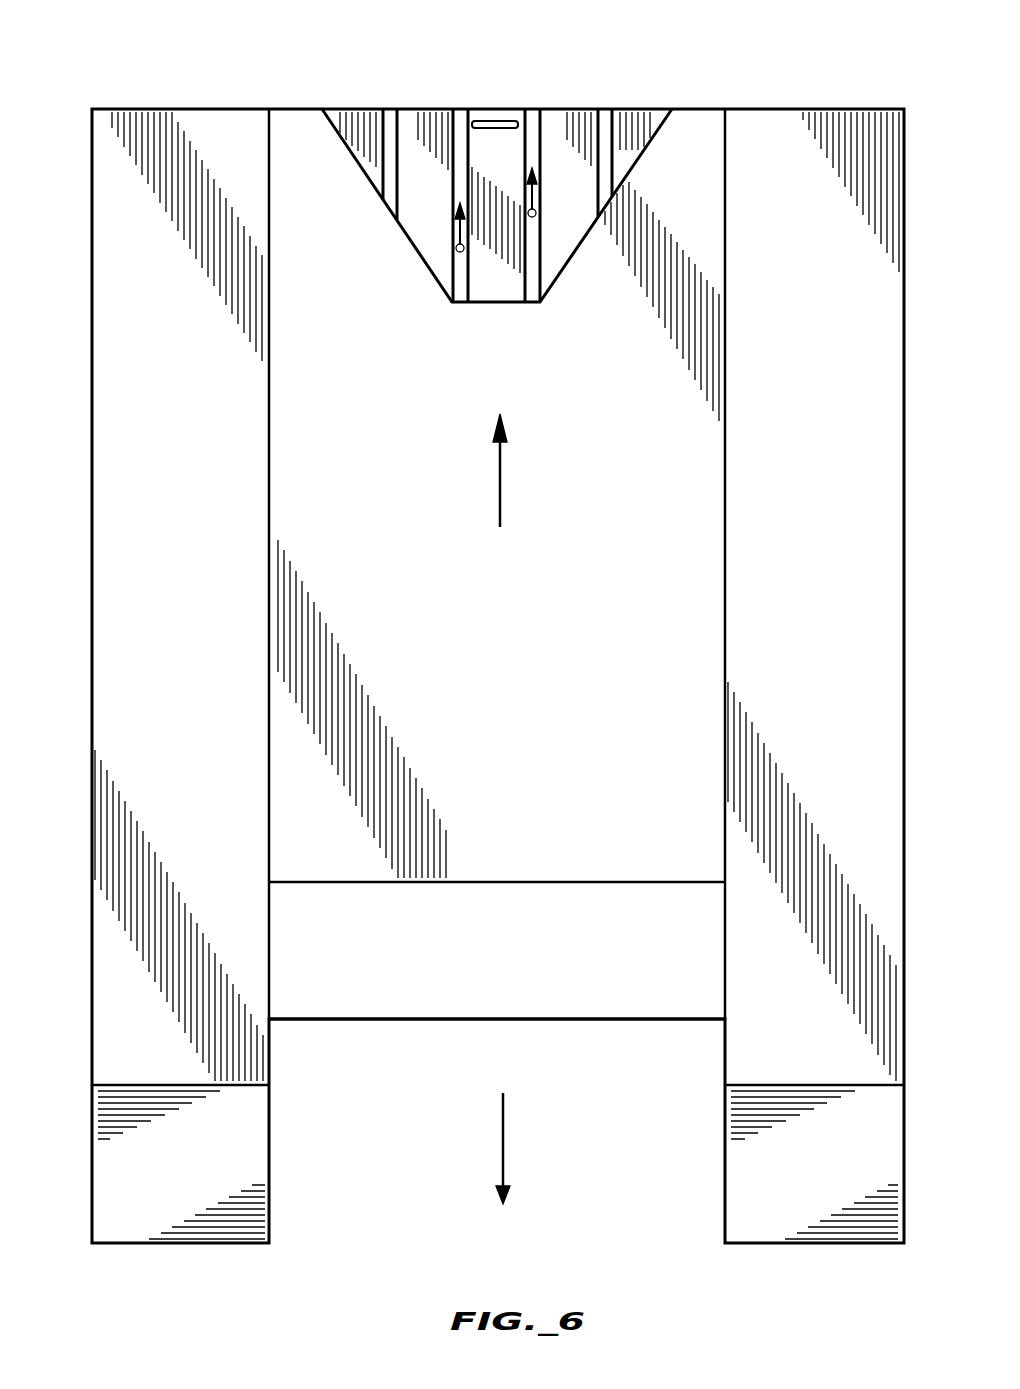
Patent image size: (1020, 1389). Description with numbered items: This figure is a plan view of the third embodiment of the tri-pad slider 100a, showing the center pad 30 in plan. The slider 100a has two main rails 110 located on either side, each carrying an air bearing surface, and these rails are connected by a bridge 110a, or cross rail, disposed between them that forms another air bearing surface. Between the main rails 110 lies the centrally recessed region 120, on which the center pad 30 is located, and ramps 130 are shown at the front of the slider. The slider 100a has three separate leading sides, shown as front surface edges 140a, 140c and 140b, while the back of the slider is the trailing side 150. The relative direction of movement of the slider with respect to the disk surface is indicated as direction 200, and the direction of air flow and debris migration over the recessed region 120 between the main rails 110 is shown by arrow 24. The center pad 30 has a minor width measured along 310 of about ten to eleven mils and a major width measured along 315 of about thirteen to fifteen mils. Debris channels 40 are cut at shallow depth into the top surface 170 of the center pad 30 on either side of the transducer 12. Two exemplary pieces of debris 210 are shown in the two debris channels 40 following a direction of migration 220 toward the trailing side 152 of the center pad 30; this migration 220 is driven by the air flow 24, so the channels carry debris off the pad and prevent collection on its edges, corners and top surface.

The tri-pad slider 100a is at (722, 90).
The main rails 110 is at (173, 533).
The bridge 110a is at (525, 963).
The recessed region 120 is at (517, 651).
The ramps 130 is at (208, 1169).
The leading side 140a is at (162, 1259).
The leading side 140b is at (783, 1259).
The leading side 140c is at (513, 1034).
The direction of movement 200 is at (503, 1140).
The direction of air flow 24 is at (500, 493).
The trailing side 150 is at (267, 93).
The trailing side of center pad 152 is at (348, 92).
The center pad 30 is at (658, 106).
The debris channels 40 is at (602, 106).
The transducer 12 is at (487, 120).
The top surface 170 is at (508, 293).
The direction of migration 220 is at (530, 190).
The debris 210 is at (534, 218).
The minor width 310 is at (537, 360).
The major width 315 is at (668, 8).